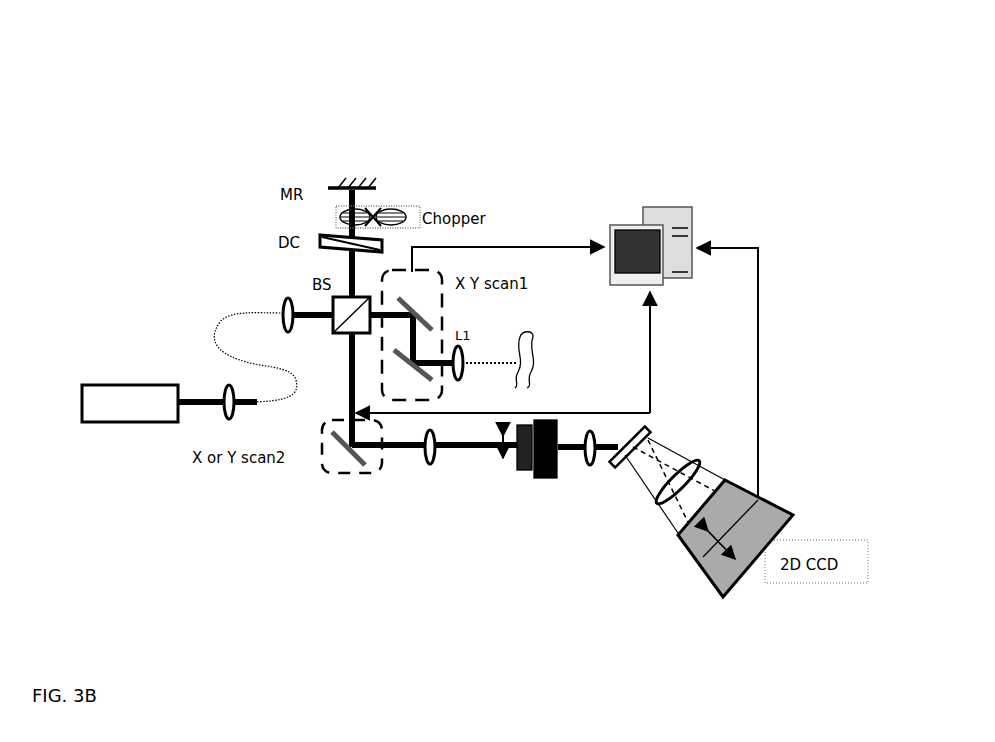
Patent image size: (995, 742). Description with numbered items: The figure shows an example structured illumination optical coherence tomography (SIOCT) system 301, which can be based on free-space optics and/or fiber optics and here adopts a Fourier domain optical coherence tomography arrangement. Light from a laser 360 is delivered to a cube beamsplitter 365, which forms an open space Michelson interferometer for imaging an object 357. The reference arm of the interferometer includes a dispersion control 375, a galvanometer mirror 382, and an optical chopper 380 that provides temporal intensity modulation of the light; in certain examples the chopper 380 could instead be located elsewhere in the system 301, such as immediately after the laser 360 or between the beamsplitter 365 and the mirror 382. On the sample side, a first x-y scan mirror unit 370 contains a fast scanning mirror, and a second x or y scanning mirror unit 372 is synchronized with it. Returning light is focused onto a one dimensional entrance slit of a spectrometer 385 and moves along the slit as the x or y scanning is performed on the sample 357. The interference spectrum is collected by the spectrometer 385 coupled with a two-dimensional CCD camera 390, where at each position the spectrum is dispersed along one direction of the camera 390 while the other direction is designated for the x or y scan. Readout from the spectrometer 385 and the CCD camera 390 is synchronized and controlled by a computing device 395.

The SIOCT system 301 is at (166, 148).
The galvanometer mirror 382 is at (345, 178).
The optical chopper 380 is at (405, 214).
The dispersion control 375 is at (320, 245).
The cube beamsplitter 365 is at (336, 334).
The laser 360 is at (130, 420).
The second scanning mirror unit 372 is at (452, 398).
The first x-y scan mirror unit 370 is at (360, 474).
The spectrometer 385 is at (553, 480).
The 2D CCD camera 390 is at (700, 560).
The computing device 395 is at (668, 207).
The object 357 is at (540, 338).